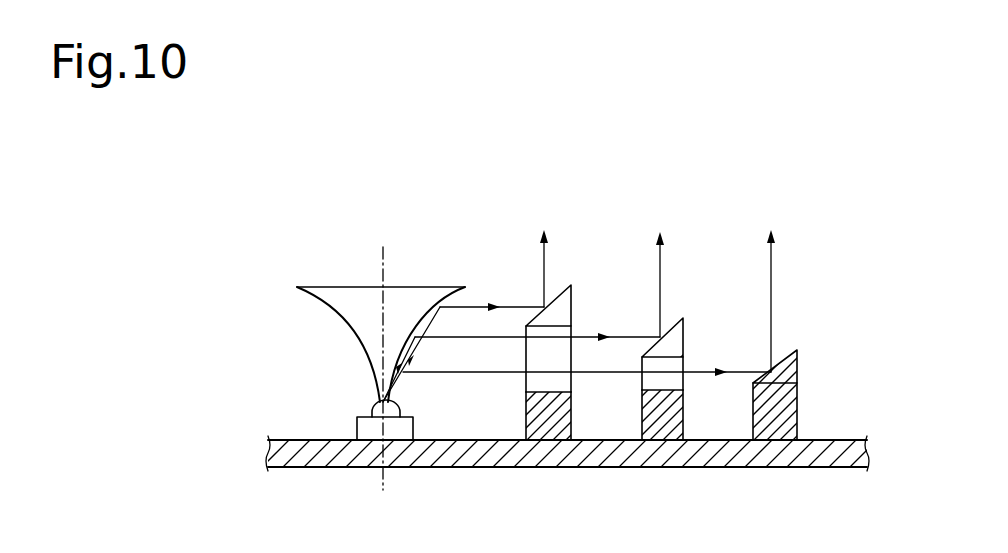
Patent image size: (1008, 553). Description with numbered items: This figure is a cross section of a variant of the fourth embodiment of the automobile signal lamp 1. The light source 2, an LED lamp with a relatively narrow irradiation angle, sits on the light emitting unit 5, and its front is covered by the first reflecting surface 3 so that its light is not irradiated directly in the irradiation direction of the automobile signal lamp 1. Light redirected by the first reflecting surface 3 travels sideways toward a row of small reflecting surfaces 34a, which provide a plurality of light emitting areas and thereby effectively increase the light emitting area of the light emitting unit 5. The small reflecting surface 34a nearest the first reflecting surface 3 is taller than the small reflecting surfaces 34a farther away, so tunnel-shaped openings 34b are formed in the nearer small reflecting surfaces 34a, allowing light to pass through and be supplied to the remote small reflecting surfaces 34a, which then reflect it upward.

The automobile signal lamp 1 is at (276, 346).
The light source 2 is at (363, 427).
The first reflecting surface 3 is at (347, 298).
The light emitting unit 5 is at (468, 460).
The small reflecting surface 34a is at (570, 413).
The tunnel-shaped opening 34b is at (535, 380).